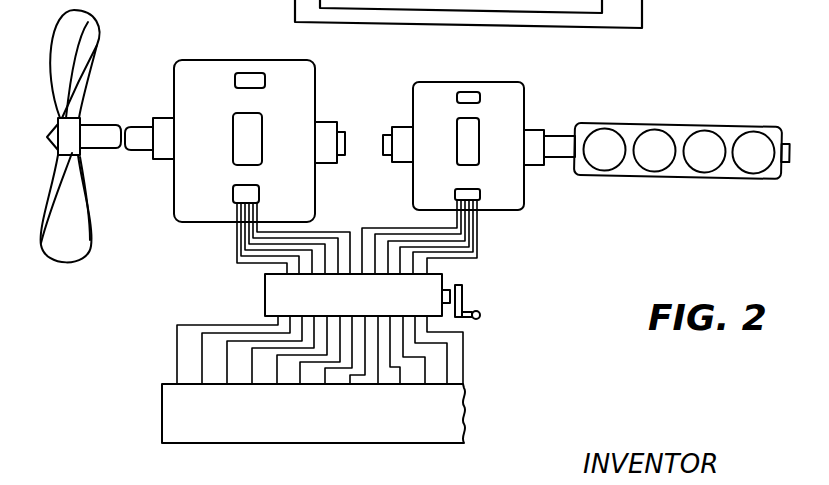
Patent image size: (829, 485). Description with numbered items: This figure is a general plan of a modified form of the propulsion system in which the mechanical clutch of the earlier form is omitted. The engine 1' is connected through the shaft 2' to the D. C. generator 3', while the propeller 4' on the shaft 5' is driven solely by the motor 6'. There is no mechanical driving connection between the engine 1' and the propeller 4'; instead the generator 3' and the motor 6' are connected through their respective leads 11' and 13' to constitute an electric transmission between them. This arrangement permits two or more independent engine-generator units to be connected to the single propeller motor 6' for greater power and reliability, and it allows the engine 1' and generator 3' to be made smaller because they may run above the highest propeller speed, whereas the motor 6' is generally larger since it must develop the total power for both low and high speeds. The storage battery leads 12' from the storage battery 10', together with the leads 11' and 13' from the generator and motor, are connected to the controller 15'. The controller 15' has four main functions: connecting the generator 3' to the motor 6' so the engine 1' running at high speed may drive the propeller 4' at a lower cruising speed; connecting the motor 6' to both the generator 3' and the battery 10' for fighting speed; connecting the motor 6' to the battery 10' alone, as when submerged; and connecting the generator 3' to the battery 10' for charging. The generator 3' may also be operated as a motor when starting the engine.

The engine 1' is at (682, 133).
The shaft 2' is at (568, 120).
The D. C. generator 3' is at (463, 132).
The propeller 4' is at (87, 136).
The shaft 5' is at (127, 120).
The motor 6' is at (269, 139).
The storage battery 10' is at (313, 432).
The leads 11' is at (447, 237).
The storage battery leads 12' is at (347, 350).
The leads 13' is at (266, 241).
The controller 15' is at (474, 292).